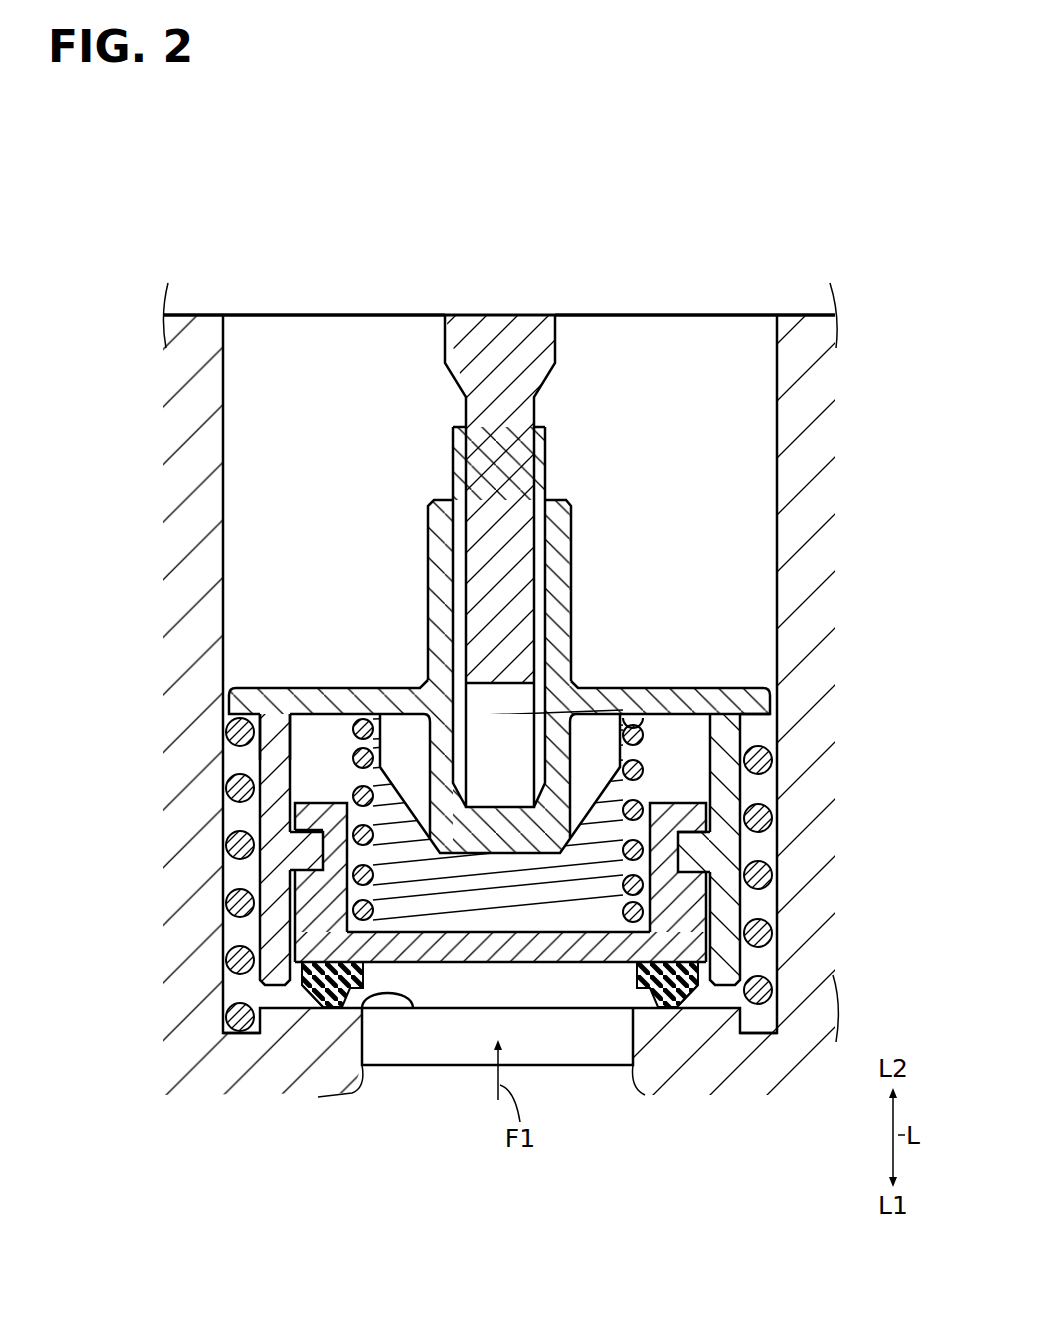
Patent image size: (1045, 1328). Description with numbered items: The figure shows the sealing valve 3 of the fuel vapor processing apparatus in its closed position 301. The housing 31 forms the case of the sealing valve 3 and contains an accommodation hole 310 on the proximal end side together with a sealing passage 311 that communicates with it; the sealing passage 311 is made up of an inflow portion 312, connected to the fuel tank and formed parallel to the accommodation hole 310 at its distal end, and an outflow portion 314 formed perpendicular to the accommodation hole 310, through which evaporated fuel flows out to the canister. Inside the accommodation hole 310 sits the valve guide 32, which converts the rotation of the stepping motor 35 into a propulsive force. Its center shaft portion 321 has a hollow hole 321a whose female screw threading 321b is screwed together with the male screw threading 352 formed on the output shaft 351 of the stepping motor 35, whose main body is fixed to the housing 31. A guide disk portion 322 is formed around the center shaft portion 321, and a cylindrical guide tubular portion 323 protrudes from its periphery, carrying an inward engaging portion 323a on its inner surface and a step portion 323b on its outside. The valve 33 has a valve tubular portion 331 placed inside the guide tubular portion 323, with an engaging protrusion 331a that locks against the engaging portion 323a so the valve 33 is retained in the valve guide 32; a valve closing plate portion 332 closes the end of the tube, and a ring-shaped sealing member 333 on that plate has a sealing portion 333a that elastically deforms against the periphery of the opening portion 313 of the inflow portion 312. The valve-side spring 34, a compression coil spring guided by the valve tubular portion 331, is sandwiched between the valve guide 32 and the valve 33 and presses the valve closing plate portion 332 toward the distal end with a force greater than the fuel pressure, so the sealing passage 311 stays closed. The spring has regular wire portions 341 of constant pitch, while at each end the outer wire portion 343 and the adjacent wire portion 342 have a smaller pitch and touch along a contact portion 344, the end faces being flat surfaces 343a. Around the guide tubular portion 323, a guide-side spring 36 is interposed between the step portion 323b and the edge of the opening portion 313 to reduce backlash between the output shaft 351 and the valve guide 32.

The sealing valve 3 is at (241, 245).
The housing 31 is at (272, 1068).
The accommodation hole 310 is at (350, 506).
The sealing passage 311 is at (808, 961).
The inflow portion 312 is at (473, 1040).
The opening portion 313 is at (413, 1000).
The outflow portion 314 is at (806, 922).
The valve guide 32 is at (420, 665).
The center shaft portion 321 is at (572, 553).
The hollow hole 321a is at (548, 628).
The female screw threading 321b is at (535, 570).
The guide disk portion 322 is at (330, 700).
The guide tubular portion 323 is at (273, 810).
The engaging portion 323a is at (307, 850).
The step portion 323b is at (226, 731).
The valve 33 is at (543, 963).
The closed position 301 is at (500, 1097).
The valve tubular portion 331 is at (663, 888).
The engaging protrusion 331a is at (693, 815).
The valve closing plate portion 332 is at (587, 950).
The sealing member 333 is at (307, 973).
The sealing portion 333a is at (320, 1000).
The valve-side spring 34 is at (350, 752).
The regular wire portion 341 is at (645, 772).
The adjacent wire portion 342 is at (742, 748).
The outer wire portion 343 is at (708, 716).
The flat surface 343a is at (638, 716).
The contact portion 344 is at (645, 738).
The stepping motor 35 is at (697, 288).
The output shaft 351 is at (503, 352).
The male screw threading 352 is at (452, 470).
The guide-side spring 36 is at (225, 786).